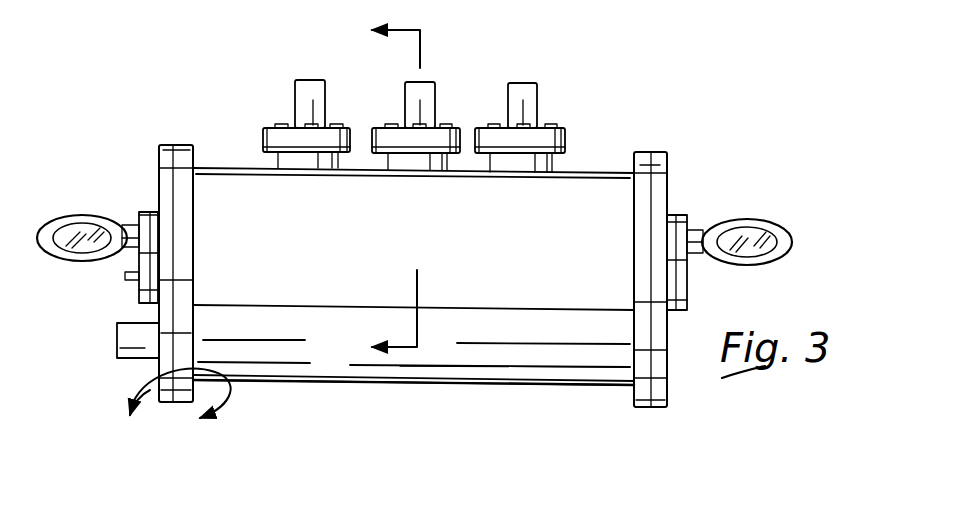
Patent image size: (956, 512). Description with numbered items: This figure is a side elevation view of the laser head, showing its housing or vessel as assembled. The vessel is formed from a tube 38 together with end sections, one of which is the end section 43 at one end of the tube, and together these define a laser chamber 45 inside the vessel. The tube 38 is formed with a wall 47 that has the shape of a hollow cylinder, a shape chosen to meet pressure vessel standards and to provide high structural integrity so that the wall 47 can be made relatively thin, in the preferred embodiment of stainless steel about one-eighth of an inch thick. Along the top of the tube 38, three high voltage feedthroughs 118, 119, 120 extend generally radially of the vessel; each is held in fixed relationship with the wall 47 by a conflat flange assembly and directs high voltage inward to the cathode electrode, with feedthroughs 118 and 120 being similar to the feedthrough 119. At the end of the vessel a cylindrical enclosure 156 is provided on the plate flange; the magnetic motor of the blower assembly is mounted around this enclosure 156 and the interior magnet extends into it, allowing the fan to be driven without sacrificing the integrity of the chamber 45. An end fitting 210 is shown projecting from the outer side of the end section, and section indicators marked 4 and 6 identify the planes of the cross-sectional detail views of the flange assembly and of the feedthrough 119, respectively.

The tube 38 is at (382, 403).
The end section 43 is at (656, 413).
The laser chamber 45 is at (563, 342).
The wall 47 is at (490, 365).
The high voltage feedthrough 118 is at (264, 126).
The feedthrough 119 is at (454, 121).
The high voltage feedthrough 120 is at (561, 127).
The cylindrical enclosure 156 is at (118, 353).
The end fitting 210 is at (115, 292).
The section line 6- 6 is at (376, 190).
The section line 4- 4 is at (180, 411).